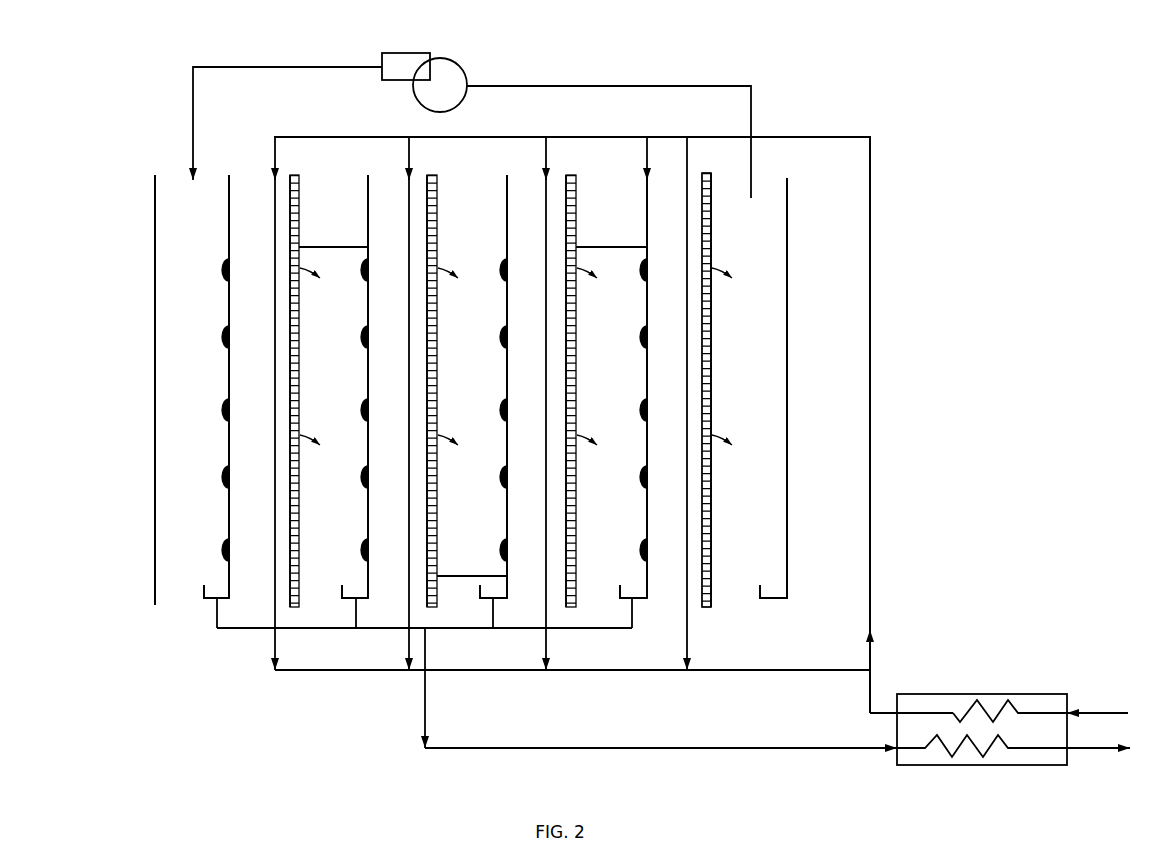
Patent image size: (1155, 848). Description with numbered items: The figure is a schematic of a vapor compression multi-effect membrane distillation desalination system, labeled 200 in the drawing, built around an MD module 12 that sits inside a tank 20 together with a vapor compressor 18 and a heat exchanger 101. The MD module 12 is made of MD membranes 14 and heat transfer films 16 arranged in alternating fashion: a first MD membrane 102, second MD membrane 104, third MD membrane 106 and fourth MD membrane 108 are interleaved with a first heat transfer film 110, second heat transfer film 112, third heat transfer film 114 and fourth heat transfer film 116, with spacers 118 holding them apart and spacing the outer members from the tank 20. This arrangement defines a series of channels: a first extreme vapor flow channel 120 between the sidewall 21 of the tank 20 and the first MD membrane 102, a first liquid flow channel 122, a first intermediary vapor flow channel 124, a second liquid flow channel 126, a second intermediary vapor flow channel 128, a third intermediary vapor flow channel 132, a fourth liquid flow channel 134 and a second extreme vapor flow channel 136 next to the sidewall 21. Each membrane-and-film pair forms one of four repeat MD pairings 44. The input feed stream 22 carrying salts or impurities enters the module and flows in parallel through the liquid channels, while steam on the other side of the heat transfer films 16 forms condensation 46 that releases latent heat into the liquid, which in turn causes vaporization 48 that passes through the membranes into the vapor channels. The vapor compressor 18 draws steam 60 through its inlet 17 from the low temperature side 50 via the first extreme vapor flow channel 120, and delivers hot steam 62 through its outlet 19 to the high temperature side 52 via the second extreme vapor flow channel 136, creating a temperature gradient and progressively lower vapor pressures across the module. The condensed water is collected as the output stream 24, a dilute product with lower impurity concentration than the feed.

The electrolysis system 200 is at (868, 69).
The low temperature side 50 is at (895, 346).
The MD module 12 is at (792, 312).
The MD membranes 14 is at (706, 172).
The heat transfer films 16 is at (232, 567).
The inlet 17 is at (470, 82).
The vapor compressor 18 is at (450, 60).
The outlet 19 is at (382, 60).
The tank 20 is at (788, 441).
The sidewall 21 is at (787, 499).
The input feed stream 22 is at (872, 655).
The output stream 24 is at (687, 747).
The repeat MD pairings 44 is at (660, 630).
The condensation 46 is at (364, 488).
The vaporization 48 is at (598, 280).
The high temperature side 52 is at (130, 347).
The steam 60 is at (752, 114).
The hot steam 62 is at (190, 114).
The heat exchanger 101 is at (995, 694).
The first MD membrane 102 is at (712, 238).
The second MD membrane 104 is at (577, 183).
The third MD membrane 106 is at (438, 183).
The fourth MD membrane 108 is at (300, 183).
The first heat transfer film 110 is at (647, 373).
The second heat transfer film 112 is at (507, 373).
The third heat transfer film 114 is at (368, 307).
The fourth heat transfer film 116 is at (228, 226).
The spacers 118 is at (335, 247).
The first extreme vapor flow channel 120 is at (725, 385).
The first liquid flow channel 122 is at (650, 312).
The first intermediary vapor flow channel 124 is at (590, 558).
The second liquid flow channel 126 is at (510, 312).
The second intermediary vapor flow channel 128 is at (455, 558).
The third intermediary vapor flow channel 132 is at (318, 382).
The fourth liquid flow channel 134 is at (240, 312).
The second extreme vapor flow channel 136 is at (175, 387).